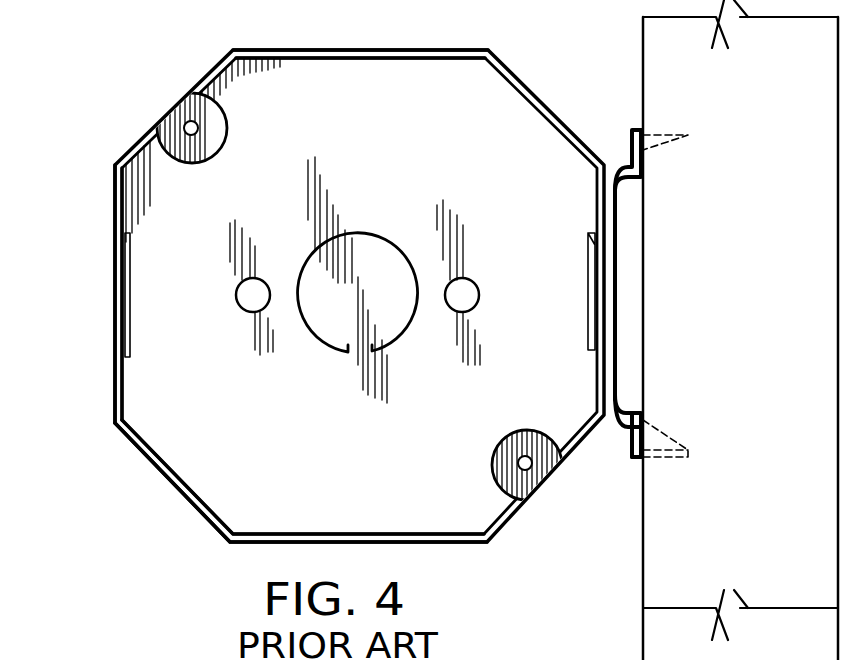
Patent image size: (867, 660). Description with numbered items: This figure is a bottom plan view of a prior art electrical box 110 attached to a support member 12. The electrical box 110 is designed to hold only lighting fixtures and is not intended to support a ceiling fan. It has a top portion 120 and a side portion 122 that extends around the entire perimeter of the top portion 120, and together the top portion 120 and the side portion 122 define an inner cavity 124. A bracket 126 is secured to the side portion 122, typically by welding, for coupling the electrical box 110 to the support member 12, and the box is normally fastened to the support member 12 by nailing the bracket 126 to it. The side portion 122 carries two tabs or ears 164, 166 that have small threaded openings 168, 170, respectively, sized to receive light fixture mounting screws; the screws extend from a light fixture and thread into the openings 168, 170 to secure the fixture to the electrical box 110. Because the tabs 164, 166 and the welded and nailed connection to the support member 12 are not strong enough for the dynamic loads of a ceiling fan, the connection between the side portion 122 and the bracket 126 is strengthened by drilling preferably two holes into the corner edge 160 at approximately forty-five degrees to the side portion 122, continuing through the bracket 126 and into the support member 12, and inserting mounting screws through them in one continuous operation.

The support member 12 is at (753, 89).
The prior art electrical box 110 is at (150, 82).
The top portion 120 is at (405, 84).
The side portion 122 is at (113, 370).
The inner cavity 124 is at (189, 428).
The bracket 126 is at (618, 410).
The corner edge 160 is at (545, 106).
The tab 164 is at (228, 118).
The tab 166 is at (535, 430).
The small threaded opening 168 is at (195, 129).
The small threaded opening 170 is at (520, 470).